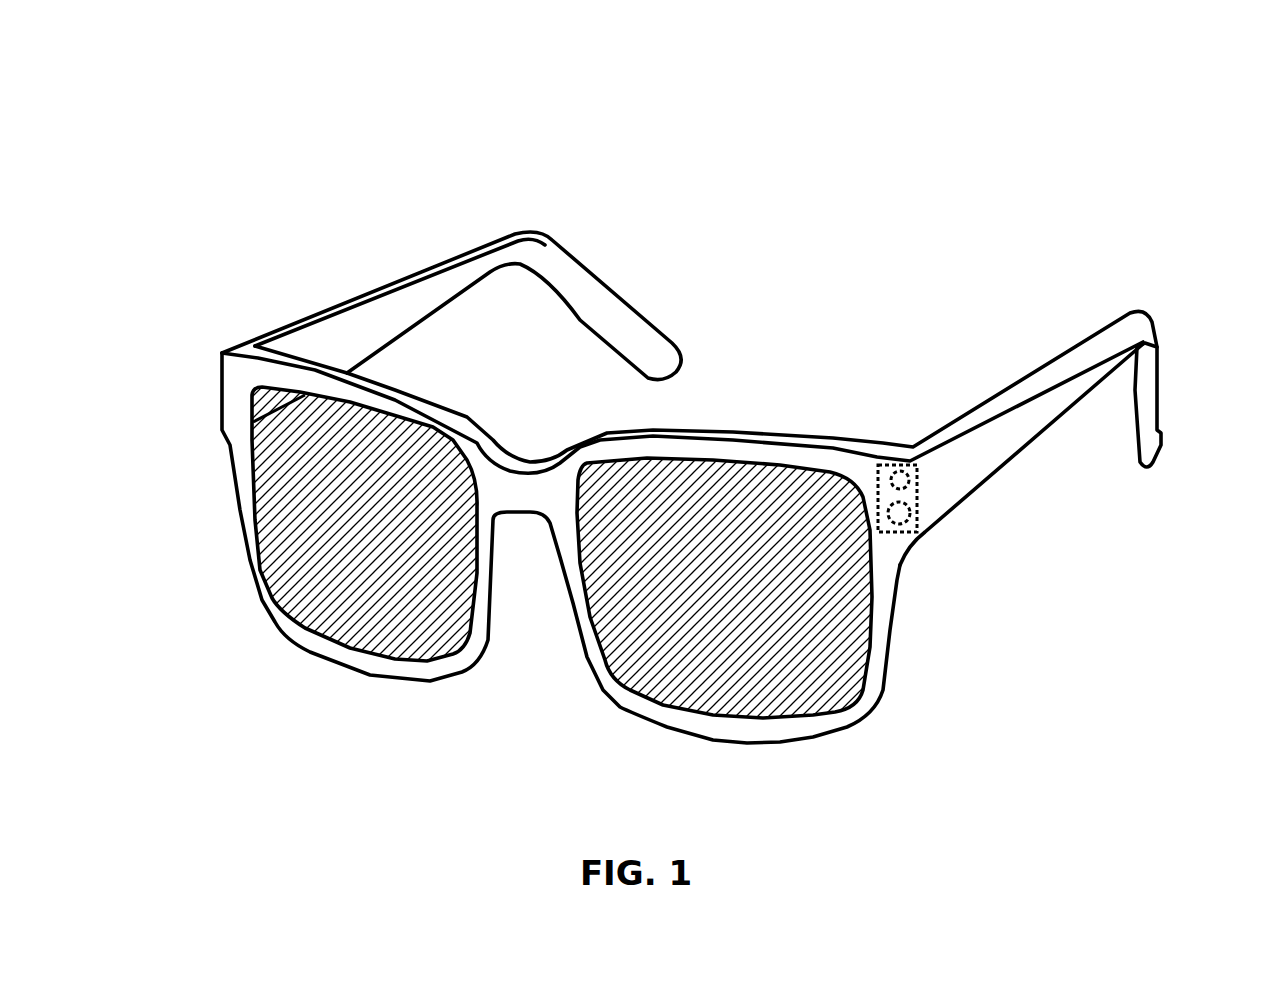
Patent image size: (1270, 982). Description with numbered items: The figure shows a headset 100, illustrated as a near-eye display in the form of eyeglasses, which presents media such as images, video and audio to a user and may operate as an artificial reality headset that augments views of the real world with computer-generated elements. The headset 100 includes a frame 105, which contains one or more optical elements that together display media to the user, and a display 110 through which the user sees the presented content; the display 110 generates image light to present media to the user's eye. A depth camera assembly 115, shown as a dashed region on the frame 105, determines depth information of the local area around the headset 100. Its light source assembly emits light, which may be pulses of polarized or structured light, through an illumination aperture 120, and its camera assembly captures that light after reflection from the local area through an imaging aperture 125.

The headset 100 is at (735, 87).
The frame 105 is at (944, 428).
The display 110 is at (303, 525).
The depth camera assembly 115 is at (974, 513).
The illumination aperture 120 is at (908, 485).
The imaging aperture 125 is at (897, 520).